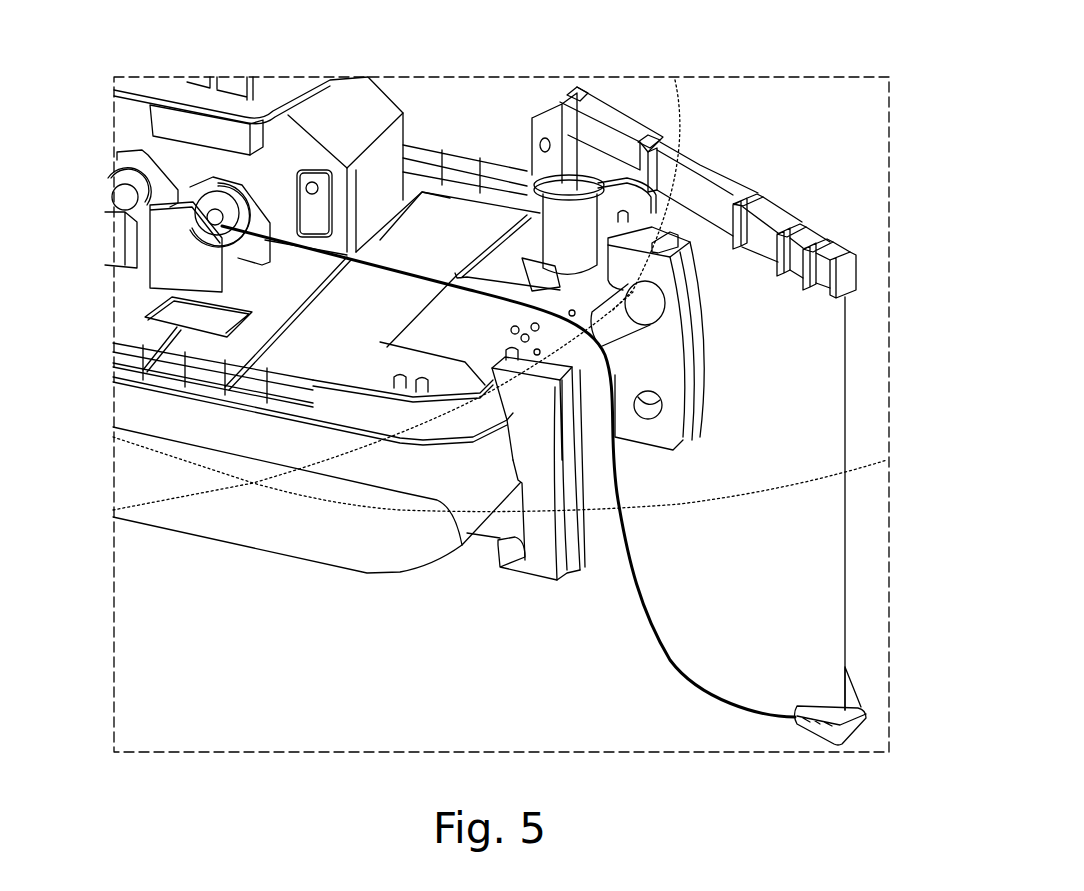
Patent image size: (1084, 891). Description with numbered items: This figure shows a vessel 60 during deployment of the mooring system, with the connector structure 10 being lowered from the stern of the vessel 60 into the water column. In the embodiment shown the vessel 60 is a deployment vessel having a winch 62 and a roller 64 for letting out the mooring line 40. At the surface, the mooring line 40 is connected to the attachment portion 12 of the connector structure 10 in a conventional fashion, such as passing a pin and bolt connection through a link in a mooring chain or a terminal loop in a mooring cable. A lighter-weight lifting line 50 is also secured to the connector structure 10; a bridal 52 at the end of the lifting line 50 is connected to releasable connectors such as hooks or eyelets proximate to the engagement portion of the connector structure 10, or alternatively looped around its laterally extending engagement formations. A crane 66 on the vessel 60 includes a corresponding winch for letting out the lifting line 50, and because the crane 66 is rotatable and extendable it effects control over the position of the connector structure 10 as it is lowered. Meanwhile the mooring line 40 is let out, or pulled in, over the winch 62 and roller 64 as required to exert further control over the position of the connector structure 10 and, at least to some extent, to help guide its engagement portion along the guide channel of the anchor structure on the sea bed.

The connector structure 10 is at (829, 752).
The attachment portion 12 is at (810, 730).
The mooring line 40 is at (650, 633).
The lifting line 50 is at (846, 514).
The bridal 52 is at (857, 688).
The vessel 60 is at (442, 222).
The winch 62 is at (127, 174).
The roller 64 is at (640, 333).
The crane 66 is at (620, 128).